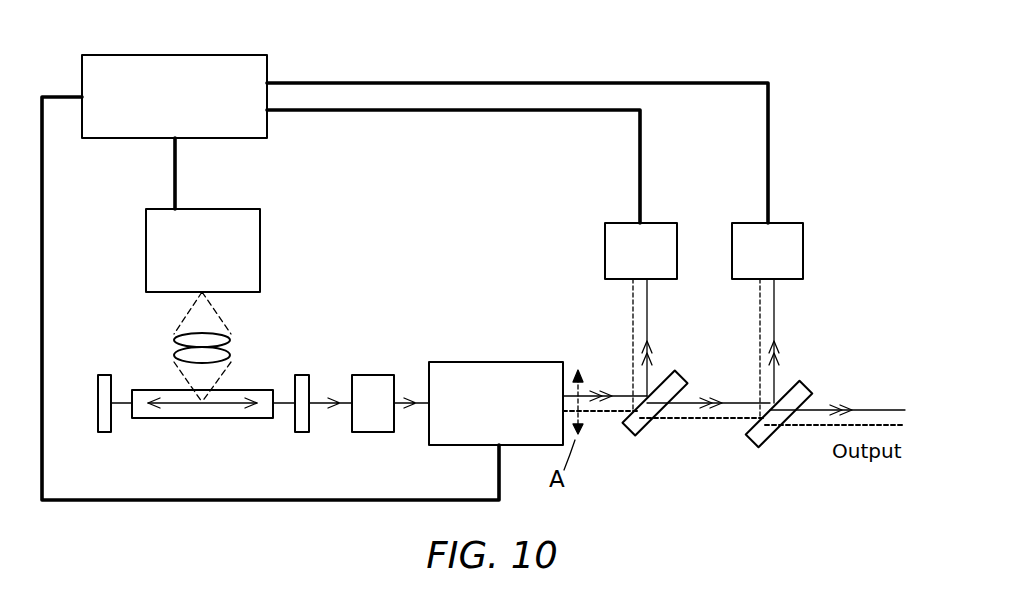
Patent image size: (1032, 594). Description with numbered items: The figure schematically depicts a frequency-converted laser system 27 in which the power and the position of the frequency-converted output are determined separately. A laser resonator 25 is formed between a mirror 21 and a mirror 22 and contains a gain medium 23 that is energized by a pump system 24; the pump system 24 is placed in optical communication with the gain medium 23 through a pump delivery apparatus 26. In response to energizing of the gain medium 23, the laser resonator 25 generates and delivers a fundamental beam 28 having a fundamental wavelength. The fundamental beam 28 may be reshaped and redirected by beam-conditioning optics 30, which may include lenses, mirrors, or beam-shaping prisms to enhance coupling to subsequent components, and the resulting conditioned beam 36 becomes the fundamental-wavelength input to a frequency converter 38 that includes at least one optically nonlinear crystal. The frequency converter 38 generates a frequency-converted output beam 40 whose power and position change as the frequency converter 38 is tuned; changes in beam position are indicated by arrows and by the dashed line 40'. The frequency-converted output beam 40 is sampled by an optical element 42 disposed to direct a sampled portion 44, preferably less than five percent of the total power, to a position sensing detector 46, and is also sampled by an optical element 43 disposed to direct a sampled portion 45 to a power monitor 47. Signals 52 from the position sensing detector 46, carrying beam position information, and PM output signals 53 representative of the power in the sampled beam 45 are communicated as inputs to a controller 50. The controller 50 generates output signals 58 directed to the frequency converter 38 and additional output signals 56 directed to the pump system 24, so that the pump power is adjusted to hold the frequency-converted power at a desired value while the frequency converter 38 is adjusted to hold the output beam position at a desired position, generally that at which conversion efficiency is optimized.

The laser system 27 is at (460, 46).
The controller 50 is at (237, 138).
The output signals 58 is at (44, 257).
The additional output signals 56 is at (175, 178).
The signals 52 is at (642, 130).
The PM output signals 53 is at (770, 136).
The pump system 24 is at (260, 252).
The pump delivery apparatus 26 is at (186, 335).
The mirror 21 is at (97, 375).
The gain medium 23 is at (232, 390).
The laser resonator 25 is at (218, 458).
The mirror 22 is at (305, 375).
The fundamental beam 28 is at (322, 405).
The beam-conditioning optics 30 is at (366, 375).
The conditioned beam 36 is at (420, 405).
The frequency converter 38 is at (487, 344).
The frequency-converted output beam 40 is at (734, 375).
The dashed line 40' is at (734, 440).
The optical element 42 is at (688, 385).
The optical element 43 is at (810, 393).
The sampled portion 44 is at (648, 305).
The sampled portion 45 is at (775, 305).
The position sensing detector 46 is at (662, 223).
The power monitor 47 is at (790, 223).